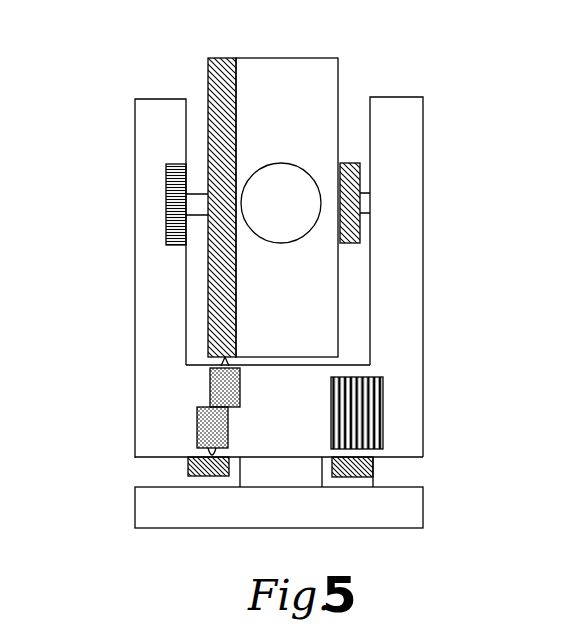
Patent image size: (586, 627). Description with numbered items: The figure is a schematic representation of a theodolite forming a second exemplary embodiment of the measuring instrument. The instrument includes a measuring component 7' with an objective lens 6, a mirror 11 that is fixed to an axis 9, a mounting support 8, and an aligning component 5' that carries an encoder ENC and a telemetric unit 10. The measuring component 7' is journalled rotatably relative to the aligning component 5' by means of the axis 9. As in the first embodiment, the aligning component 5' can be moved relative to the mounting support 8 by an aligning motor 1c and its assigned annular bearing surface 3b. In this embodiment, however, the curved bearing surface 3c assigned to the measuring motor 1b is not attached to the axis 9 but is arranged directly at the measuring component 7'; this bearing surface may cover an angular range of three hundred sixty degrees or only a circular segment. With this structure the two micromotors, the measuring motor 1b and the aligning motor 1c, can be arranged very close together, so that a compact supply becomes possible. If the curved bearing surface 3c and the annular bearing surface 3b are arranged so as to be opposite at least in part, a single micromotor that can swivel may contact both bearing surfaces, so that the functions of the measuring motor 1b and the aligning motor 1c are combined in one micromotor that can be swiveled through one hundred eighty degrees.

The aligning component 5' is at (225, 277).
The measuring component 7' is at (225, 194).
The objective lens 6 is at (285, 198).
The encoder ENC is at (174, 203).
The axis 9 is at (197, 207).
The mirror 11 is at (355, 230).
The curved bearing surface 3c is at (215, 337).
The measuring motor 1b is at (218, 387).
The aligning motor 1c is at (222, 432).
The telemetric unit 10 is at (367, 390).
The annular bearing surface 3b is at (365, 456).
The mounting support 8 is at (208, 510).